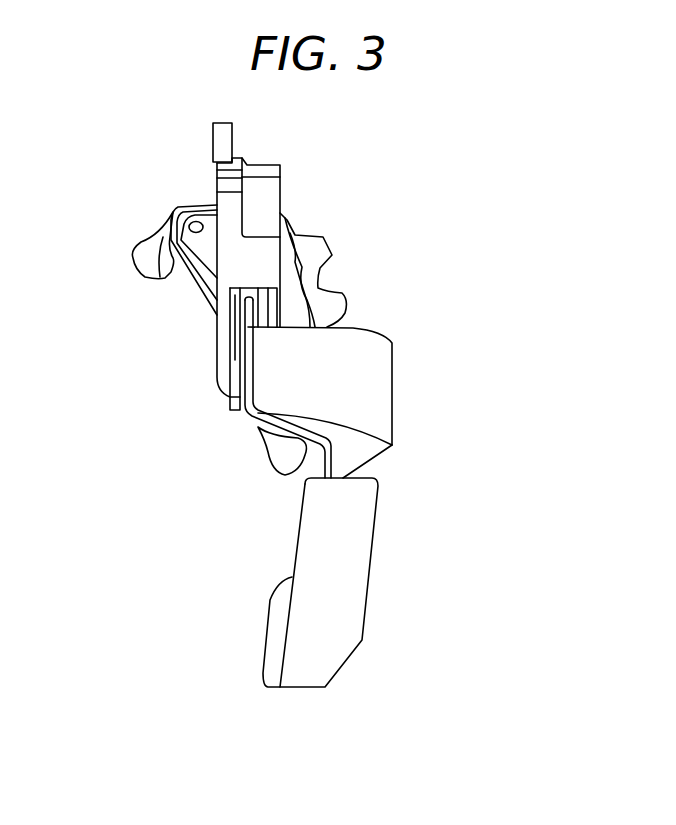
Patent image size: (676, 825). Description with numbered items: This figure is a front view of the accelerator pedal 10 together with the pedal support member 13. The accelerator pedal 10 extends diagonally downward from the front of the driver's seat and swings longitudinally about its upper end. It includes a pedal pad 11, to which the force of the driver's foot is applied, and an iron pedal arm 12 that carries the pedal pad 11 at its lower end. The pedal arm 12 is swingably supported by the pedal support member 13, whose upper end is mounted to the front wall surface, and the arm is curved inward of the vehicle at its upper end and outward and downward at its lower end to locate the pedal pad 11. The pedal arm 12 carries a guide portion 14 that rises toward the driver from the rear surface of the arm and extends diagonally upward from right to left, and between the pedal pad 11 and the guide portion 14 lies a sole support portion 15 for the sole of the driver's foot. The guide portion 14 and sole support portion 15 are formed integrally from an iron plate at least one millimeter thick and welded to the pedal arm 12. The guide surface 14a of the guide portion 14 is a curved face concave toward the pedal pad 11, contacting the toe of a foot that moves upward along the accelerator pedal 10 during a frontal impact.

The accelerator pedal 10 is at (450, 387).
The pedal pad 11 is at (357, 573).
The pedal arm 12 is at (268, 430).
The pedal support member 13 is at (265, 255).
The guide portion 14 is at (390, 320).
The guide surface 14a is at (372, 360).
The sole support portion 15 is at (362, 447).